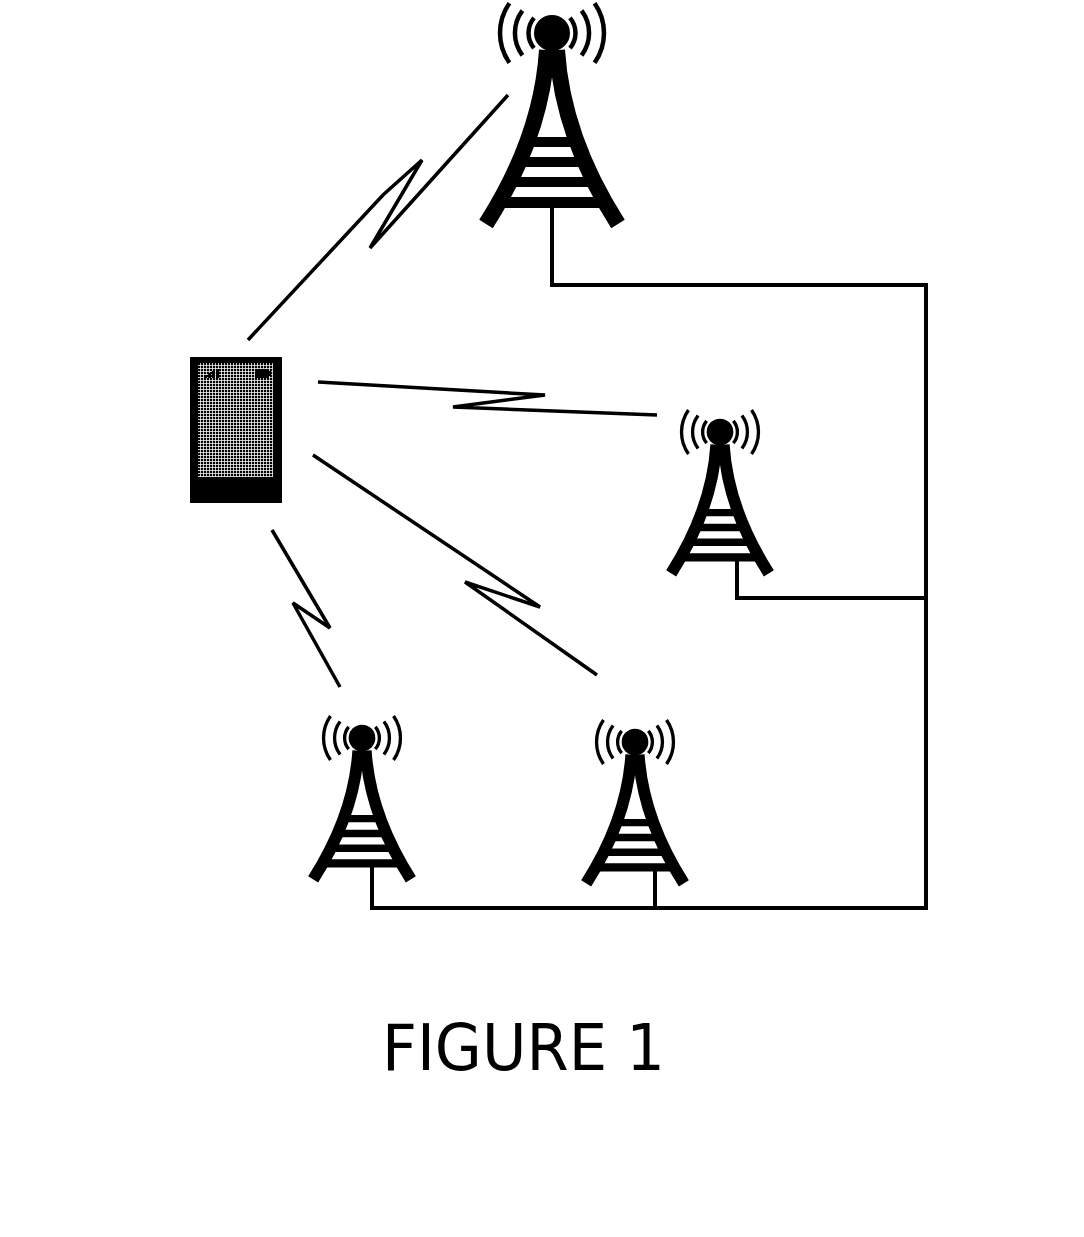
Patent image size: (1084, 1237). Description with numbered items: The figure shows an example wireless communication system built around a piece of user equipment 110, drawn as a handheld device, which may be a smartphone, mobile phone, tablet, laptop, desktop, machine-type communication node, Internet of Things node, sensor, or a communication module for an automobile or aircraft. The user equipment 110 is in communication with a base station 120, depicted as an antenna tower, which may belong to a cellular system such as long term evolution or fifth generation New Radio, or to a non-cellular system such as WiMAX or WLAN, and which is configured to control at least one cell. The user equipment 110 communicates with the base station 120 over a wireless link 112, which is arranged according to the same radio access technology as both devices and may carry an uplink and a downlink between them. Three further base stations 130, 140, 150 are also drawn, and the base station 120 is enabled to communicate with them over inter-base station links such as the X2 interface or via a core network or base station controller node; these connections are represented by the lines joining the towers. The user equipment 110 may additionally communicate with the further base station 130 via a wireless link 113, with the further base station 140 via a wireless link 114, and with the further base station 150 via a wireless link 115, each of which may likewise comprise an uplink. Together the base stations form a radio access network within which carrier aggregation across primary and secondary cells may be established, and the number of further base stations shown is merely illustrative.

The user equipment 110 is at (224, 503).
The wireless link 112 is at (385, 193).
The wireless link 113 is at (505, 392).
The wireless link 114 is at (478, 565).
The wireless link 115 is at (302, 606).
The base station 120 is at (600, 176).
The further base station 130 is at (762, 547).
The further base station 140 is at (670, 843).
The further base station 150 is at (333, 863).